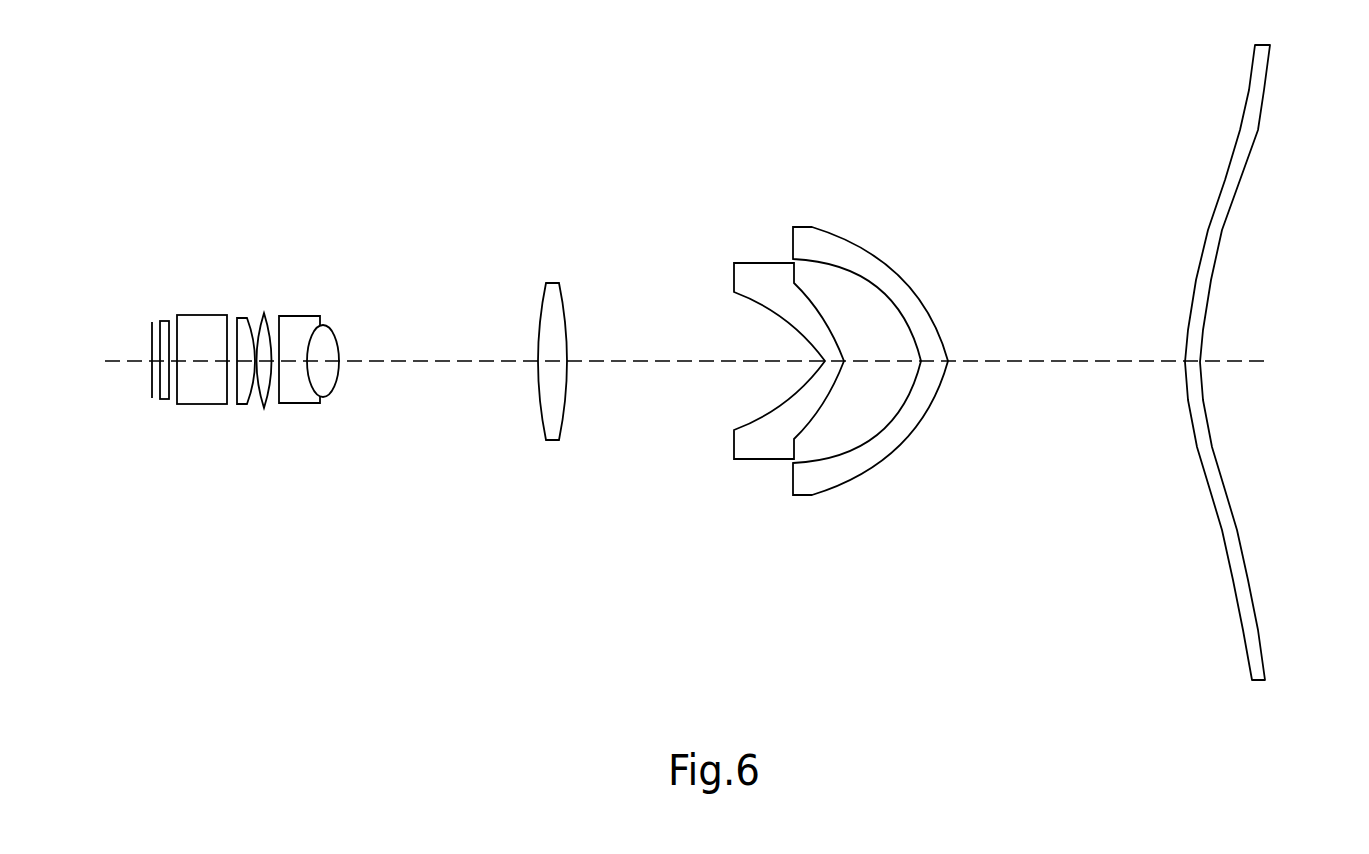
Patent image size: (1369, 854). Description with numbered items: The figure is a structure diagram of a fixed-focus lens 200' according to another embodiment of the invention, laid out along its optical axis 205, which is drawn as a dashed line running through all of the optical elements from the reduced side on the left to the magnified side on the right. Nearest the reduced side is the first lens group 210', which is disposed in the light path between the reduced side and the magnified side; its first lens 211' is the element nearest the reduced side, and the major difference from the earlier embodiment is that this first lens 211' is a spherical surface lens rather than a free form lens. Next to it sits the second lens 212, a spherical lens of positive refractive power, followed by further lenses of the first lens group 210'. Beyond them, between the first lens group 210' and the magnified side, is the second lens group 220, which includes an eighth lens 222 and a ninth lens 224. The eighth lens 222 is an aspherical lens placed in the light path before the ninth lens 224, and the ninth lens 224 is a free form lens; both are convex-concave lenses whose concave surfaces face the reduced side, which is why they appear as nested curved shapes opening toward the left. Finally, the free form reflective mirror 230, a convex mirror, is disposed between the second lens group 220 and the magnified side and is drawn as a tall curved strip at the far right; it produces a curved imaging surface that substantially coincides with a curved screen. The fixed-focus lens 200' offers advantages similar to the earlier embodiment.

The fixed-focus lens 200' is at (725, 408).
The first lens group 210' is at (292, 257).
The first lens 211' is at (239, 305).
The second lens 212 is at (266, 316).
The optical axis 205 is at (640, 360).
The second lens group 220 is at (833, 153).
The eighth lens 222 is at (742, 272).
The ninth lens 224 is at (807, 237).
The free form reflective mirror 230 is at (1258, 668).